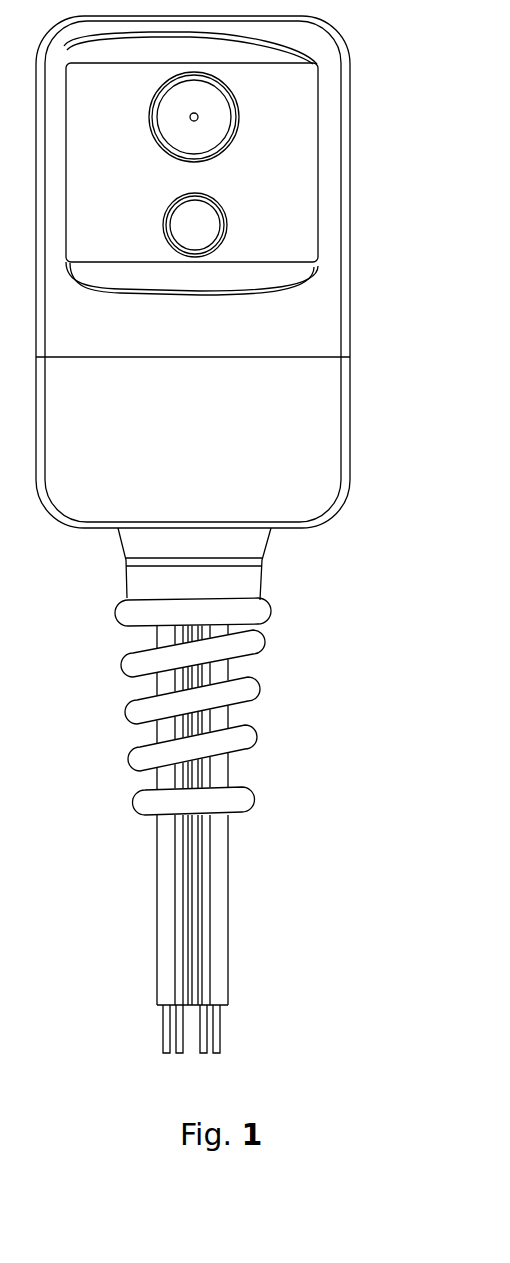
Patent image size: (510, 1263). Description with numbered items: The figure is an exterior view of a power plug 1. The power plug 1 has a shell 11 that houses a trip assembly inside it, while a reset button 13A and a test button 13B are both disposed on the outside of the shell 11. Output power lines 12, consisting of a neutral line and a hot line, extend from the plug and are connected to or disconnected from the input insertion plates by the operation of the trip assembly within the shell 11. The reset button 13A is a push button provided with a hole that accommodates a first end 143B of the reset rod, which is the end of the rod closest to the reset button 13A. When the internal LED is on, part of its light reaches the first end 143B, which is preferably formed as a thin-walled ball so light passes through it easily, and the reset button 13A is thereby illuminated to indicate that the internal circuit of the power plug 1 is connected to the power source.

The power plug 1 is at (333, 149).
The shell 11 is at (327, 314).
The output power lines 12 is at (215, 1036).
The reset button 13A is at (213, 137).
The test button 13B is at (224, 240).
The first end of the reset rod 143B is at (197, 113).